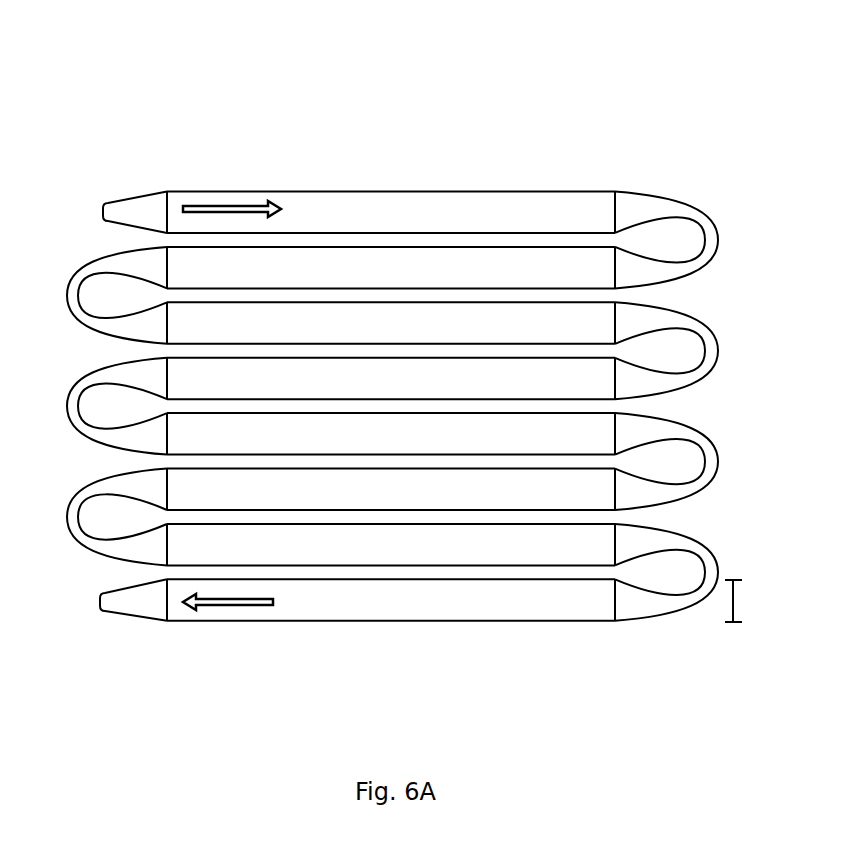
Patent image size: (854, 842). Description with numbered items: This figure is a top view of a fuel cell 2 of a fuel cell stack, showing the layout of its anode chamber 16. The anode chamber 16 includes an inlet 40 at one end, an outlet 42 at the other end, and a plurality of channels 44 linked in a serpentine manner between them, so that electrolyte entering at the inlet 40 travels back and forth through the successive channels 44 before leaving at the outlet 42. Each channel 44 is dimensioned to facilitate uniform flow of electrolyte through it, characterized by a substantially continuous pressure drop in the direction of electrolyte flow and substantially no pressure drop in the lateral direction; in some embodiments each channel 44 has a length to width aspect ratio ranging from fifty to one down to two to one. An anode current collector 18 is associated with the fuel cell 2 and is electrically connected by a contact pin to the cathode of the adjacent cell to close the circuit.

The fuel cell 2 is at (163, 113).
The anode chamber 16 is at (365, 156).
The channel 44 is at (503, 212).
The inlet 40 is at (137, 212).
The outlet 42 is at (133, 599).
The anode current collector 18 is at (735, 600).